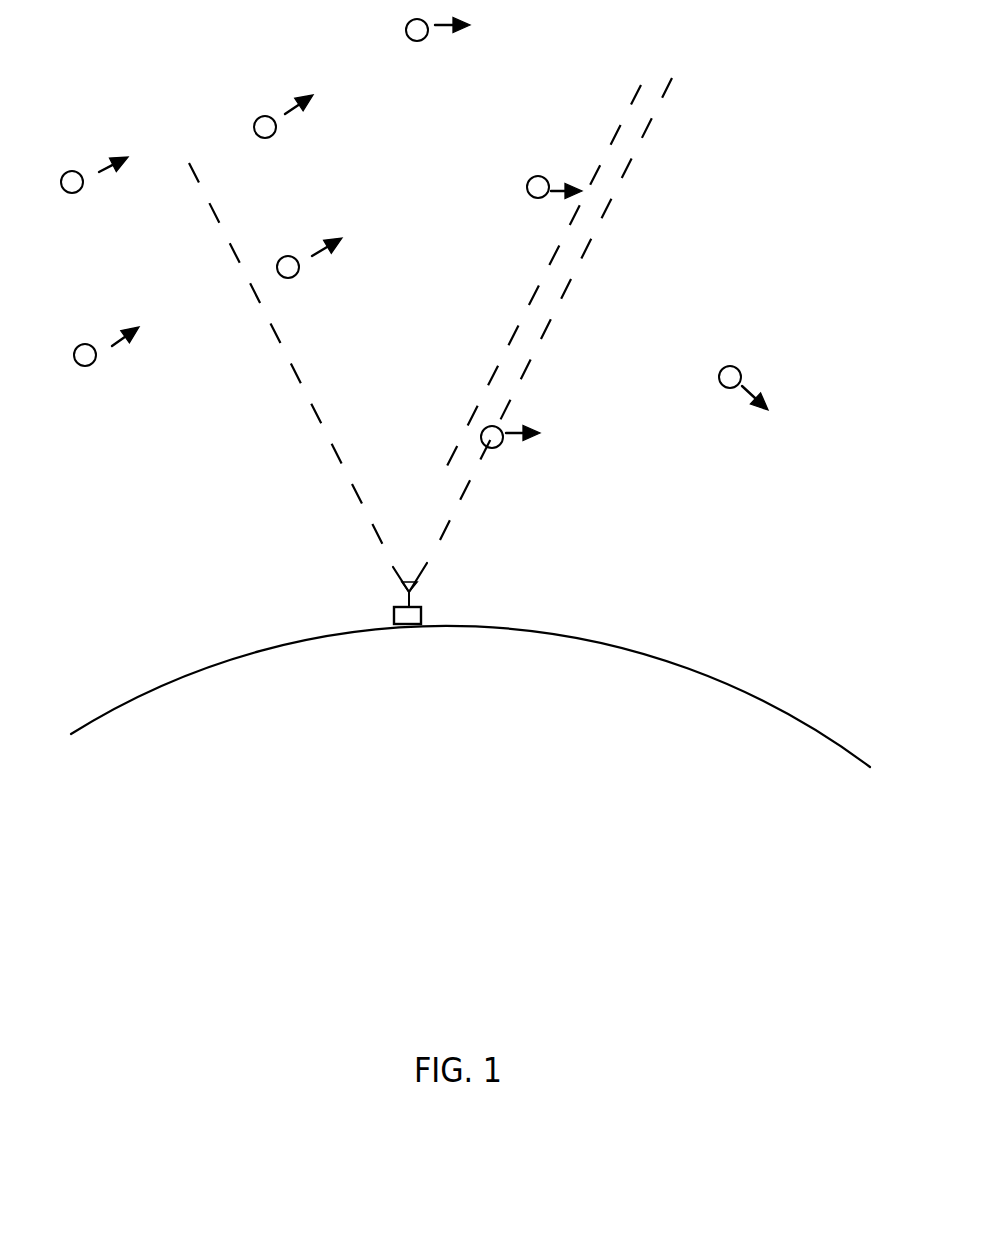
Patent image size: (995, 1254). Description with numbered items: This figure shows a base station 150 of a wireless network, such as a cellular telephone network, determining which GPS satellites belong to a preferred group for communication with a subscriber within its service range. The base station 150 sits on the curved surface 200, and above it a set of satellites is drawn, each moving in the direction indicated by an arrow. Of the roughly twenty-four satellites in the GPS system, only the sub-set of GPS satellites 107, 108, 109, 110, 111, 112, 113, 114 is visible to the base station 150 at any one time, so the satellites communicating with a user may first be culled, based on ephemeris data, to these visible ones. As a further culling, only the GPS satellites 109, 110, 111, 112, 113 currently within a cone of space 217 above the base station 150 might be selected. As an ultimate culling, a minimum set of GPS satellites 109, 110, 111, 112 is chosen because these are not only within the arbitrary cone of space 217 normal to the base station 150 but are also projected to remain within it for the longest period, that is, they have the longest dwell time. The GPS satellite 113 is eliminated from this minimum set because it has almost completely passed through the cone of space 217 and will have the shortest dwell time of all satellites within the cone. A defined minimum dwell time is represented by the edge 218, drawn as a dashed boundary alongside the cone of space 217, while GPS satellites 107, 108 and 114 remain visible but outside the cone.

The GPS satellite 107 is at (75, 191).
The GPS satellite 108 is at (93, 363).
The GPS satellite 109 is at (260, 137).
The GPS satellite 110 is at (289, 278).
The GPS satellite 111 is at (416, 41).
The GPS satellite 112 is at (532, 196).
The GPS satellite 113 is at (500, 445).
The GPS satellite 114 is at (730, 388).
The base station 150 is at (421, 618).
The earth 200 is at (459, 776).
The cone of space 217 is at (540, 338).
The edge 218 is at (632, 95).